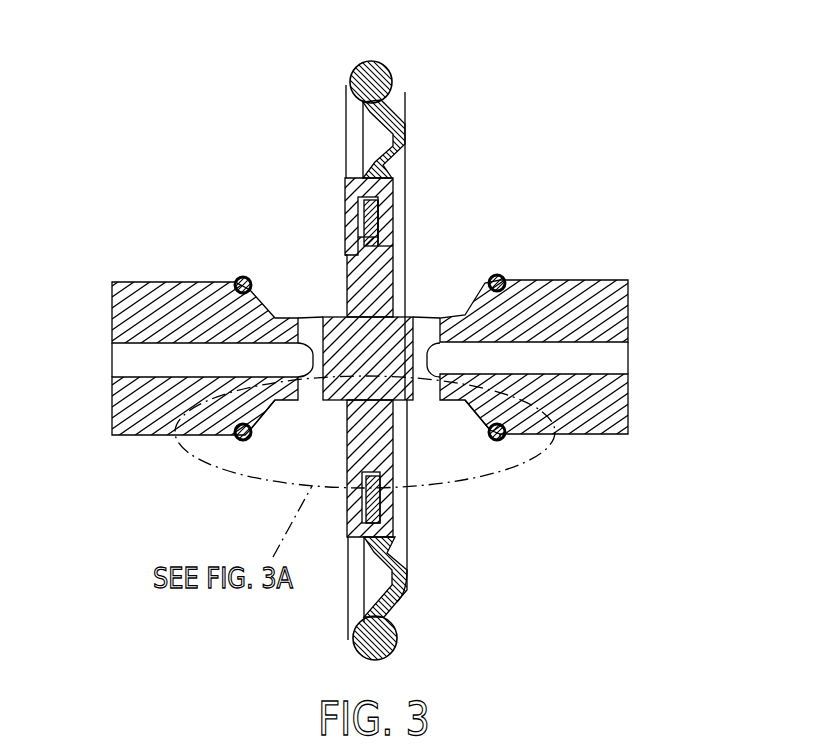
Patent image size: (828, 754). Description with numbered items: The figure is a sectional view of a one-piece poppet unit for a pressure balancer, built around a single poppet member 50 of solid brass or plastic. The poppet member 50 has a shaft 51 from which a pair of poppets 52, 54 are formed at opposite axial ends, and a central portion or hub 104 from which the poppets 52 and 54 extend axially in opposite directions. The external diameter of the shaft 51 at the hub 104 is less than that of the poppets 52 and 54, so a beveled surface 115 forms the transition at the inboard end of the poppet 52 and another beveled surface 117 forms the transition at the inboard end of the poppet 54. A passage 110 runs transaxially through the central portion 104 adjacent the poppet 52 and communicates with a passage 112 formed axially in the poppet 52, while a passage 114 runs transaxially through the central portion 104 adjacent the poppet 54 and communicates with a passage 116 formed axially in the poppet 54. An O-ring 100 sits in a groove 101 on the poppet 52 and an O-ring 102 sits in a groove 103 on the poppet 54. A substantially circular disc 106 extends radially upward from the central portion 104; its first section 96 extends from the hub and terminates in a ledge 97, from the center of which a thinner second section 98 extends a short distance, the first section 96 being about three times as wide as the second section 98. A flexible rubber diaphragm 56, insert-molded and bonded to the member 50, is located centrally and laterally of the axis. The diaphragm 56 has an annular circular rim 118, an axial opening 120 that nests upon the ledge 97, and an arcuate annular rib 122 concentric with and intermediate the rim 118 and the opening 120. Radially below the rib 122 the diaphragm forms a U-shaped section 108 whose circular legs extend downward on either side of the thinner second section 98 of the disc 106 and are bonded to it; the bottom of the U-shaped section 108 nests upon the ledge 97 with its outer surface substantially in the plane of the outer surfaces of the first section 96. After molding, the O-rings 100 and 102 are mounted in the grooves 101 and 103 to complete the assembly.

The poppet member 50 is at (620, 268).
The shaft 51 is at (404, 405).
The poppet 52 is at (134, 411).
The poppet 54 is at (607, 408).
The flexible diaphragm 56 is at (336, 77).
The first section 96 is at (392, 253).
The ledge 97 is at (386, 226).
The second section 98 is at (380, 215).
The O-ring 100 is at (243, 441).
The groove 101 is at (235, 420).
The O-ring 102 is at (520, 445).
The groove 103 is at (507, 432).
The central portion or hub 104 is at (350, 411).
The disc 106 is at (410, 266).
The U-shaped section 108 is at (340, 192).
The passage 110 is at (318, 398).
The passage 112 is at (148, 375).
The passage 114 is at (433, 318).
The beveled surface 115 is at (252, 290).
The passage 116 is at (605, 342).
The beveled surface 117 is at (490, 408).
The annular circular rim 118 is at (353, 63).
The axial opening 120 is at (345, 262).
The arcuate annular rib 122 is at (404, 141).